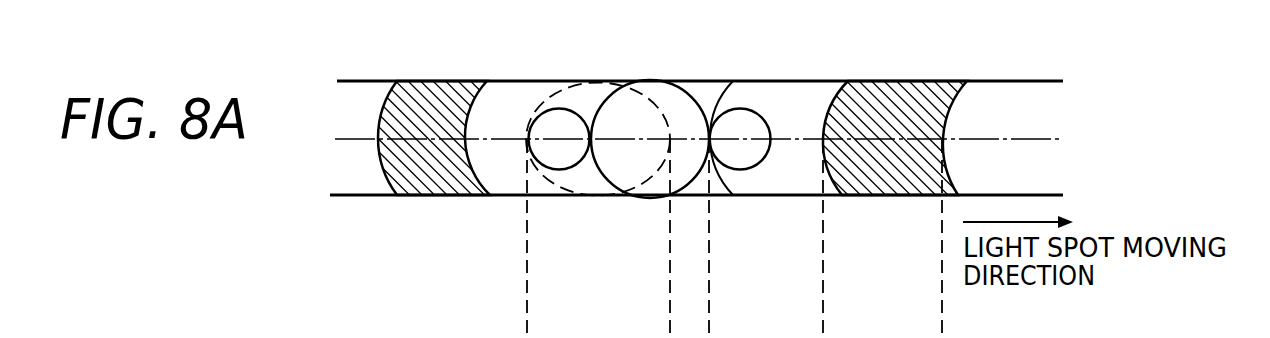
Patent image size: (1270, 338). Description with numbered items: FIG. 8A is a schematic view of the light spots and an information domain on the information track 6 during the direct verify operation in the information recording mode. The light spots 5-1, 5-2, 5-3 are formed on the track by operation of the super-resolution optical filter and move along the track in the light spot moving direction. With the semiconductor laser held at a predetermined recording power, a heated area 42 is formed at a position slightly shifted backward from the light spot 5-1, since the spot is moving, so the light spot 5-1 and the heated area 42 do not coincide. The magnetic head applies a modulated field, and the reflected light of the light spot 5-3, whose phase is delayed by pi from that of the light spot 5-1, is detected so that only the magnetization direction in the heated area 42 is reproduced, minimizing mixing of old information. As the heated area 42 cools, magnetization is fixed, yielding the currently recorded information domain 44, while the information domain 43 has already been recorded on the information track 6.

The information track 6 is at (1040, 79).
The heated area 42 is at (581, 87).
The information domain 43 is at (913, 96).
The information domain 44 is at (418, 102).
The light spot 5-1 is at (673, 97).
The light spot 5-2 is at (747, 118).
The light spot 5-3 is at (553, 123).